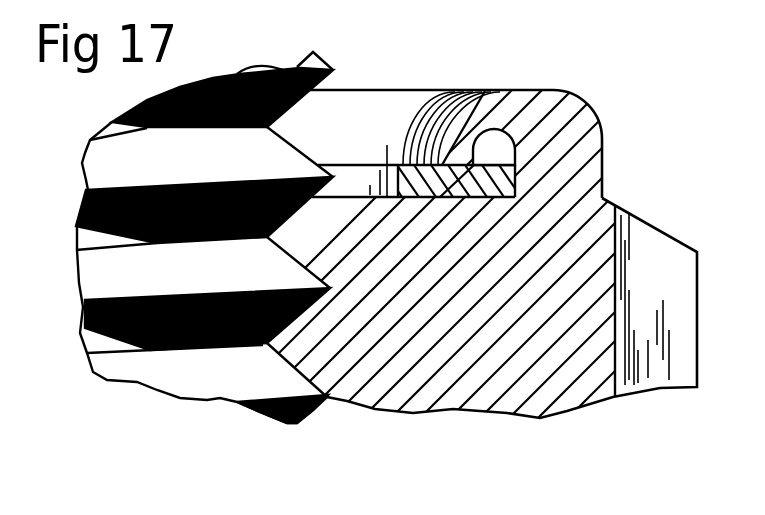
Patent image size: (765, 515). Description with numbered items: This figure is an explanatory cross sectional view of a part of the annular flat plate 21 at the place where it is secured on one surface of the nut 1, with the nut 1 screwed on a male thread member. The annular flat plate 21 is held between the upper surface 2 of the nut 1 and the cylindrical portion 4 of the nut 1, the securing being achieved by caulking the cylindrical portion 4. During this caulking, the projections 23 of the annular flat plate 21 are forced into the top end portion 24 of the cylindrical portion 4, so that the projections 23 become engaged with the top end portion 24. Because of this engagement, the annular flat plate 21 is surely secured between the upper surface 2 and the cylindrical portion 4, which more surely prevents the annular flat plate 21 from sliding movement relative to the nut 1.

The nut 1 is at (555, 365).
The upper surface 2 is at (514, 178).
The cylindrical portion 4 is at (568, 140).
The annular flat plate 21 is at (408, 165).
The projections 23 is at (500, 110).
The top end portion 24 is at (457, 158).